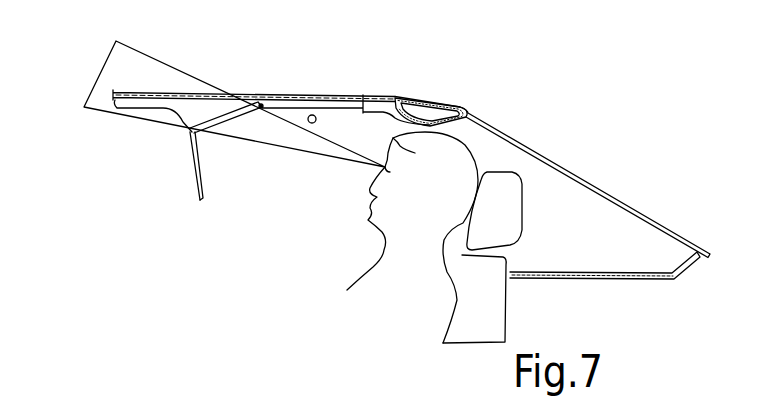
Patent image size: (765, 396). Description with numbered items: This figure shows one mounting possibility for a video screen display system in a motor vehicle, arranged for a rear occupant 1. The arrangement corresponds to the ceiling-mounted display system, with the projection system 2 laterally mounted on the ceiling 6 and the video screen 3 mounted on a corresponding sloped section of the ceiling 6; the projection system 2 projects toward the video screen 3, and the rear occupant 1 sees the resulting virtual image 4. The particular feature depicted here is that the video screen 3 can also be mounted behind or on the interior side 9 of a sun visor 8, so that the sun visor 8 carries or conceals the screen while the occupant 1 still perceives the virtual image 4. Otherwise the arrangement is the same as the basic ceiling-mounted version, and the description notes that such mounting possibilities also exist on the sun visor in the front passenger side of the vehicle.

The rear occupant 1 is at (392, 138).
The projection system 2 is at (311, 114).
The video screen 3 is at (232, 115).
The virtual image 4 is at (95, 85).
The ceiling 6 is at (364, 102).
The sun visor 8 is at (193, 173).
The interior side 9 is at (200, 173).